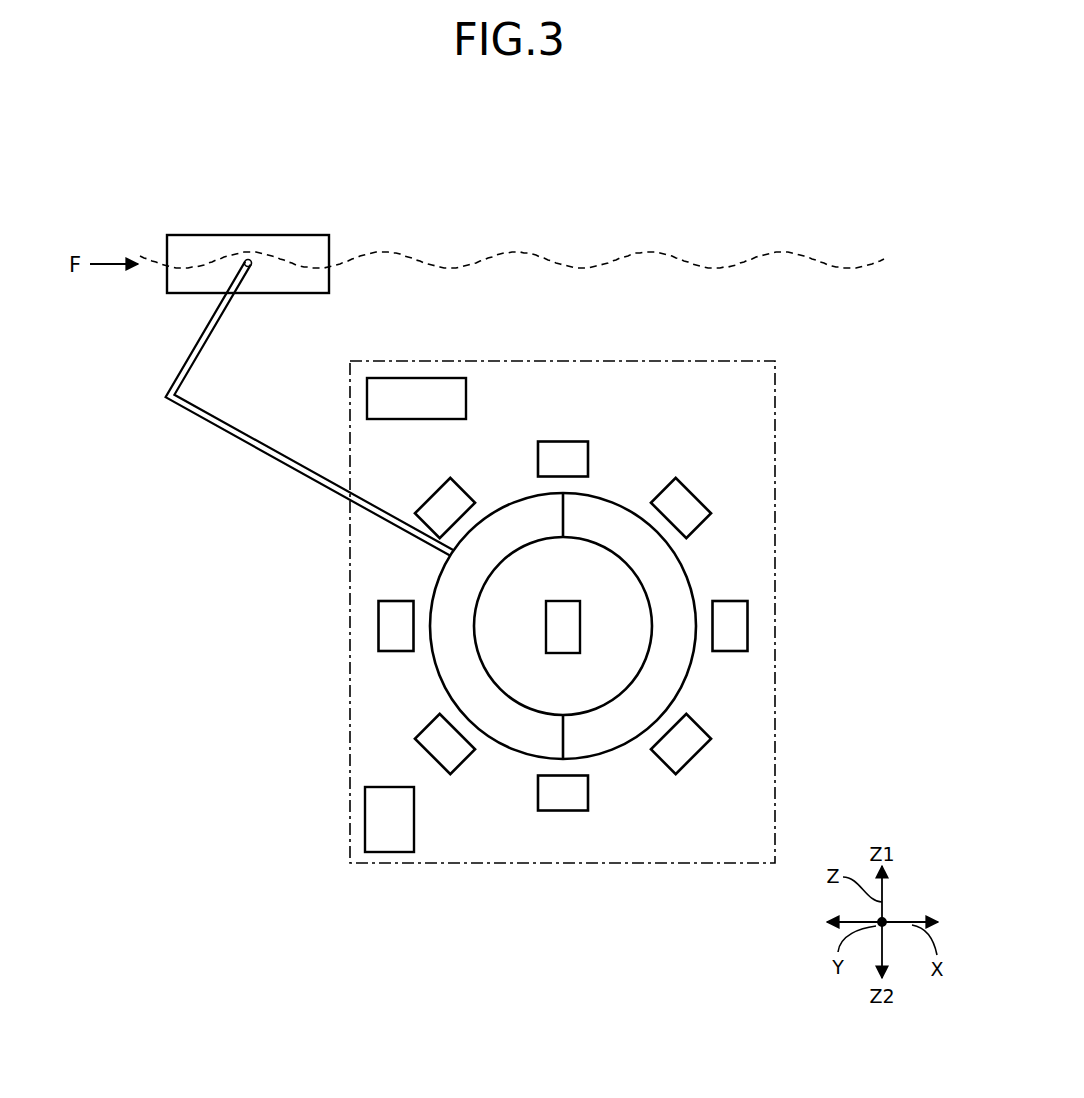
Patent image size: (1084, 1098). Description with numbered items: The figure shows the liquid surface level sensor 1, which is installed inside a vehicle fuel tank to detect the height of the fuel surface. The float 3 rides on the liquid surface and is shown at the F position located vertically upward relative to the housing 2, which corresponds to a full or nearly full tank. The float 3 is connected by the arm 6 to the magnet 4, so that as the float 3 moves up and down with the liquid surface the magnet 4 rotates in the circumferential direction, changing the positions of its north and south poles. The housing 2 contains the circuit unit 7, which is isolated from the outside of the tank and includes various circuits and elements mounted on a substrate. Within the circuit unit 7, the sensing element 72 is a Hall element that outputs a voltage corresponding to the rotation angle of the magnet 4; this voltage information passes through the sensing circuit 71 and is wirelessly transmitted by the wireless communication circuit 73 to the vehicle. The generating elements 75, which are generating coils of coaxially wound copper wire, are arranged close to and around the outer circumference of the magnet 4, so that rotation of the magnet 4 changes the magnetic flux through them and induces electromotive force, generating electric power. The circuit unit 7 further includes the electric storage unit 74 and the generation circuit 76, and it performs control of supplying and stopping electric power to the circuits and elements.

The liquid surface level sensor 1 is at (477, 190).
The housing 2 is at (780, 385).
The float 3 is at (283, 222).
The magnet 4 is at (690, 567).
The arm 6 is at (225, 435).
The circuit unit 7 is at (613, 410).
The sensing circuit 71 is at (565, 600).
The sensing element 72 is at (565, 627).
The wireless communication circuit 73 is at (389, 838).
The electric storage unit 74 is at (411, 388).
The generating coils 75 is at (562, 455).
The generation circuit 76 is at (618, 813).